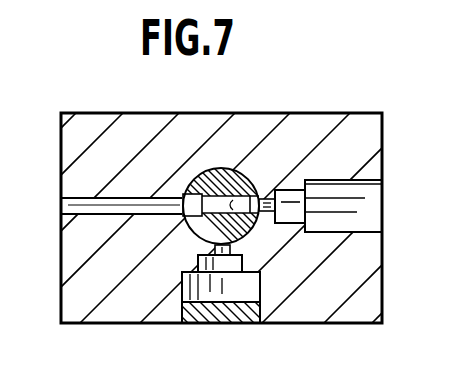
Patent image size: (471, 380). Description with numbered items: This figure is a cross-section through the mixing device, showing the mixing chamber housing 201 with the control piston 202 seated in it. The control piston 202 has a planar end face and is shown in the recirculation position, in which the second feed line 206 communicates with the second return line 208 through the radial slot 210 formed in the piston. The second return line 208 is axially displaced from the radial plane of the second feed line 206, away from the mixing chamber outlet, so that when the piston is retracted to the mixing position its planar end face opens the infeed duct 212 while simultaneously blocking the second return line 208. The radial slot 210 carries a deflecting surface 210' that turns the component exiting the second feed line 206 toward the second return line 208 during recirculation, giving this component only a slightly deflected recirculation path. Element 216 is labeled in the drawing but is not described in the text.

The mixing chamber housing 201 is at (120, 307).
The control piston 202 is at (203, 170).
The second feed line 206 is at (382, 194).
The second return line 208 is at (61, 210).
The radial slot 210 is at (254, 201).
The deflecting surface 210' is at (231, 271).
The infeed duct 212 is at (262, 184).
The seal 216 is at (187, 226).